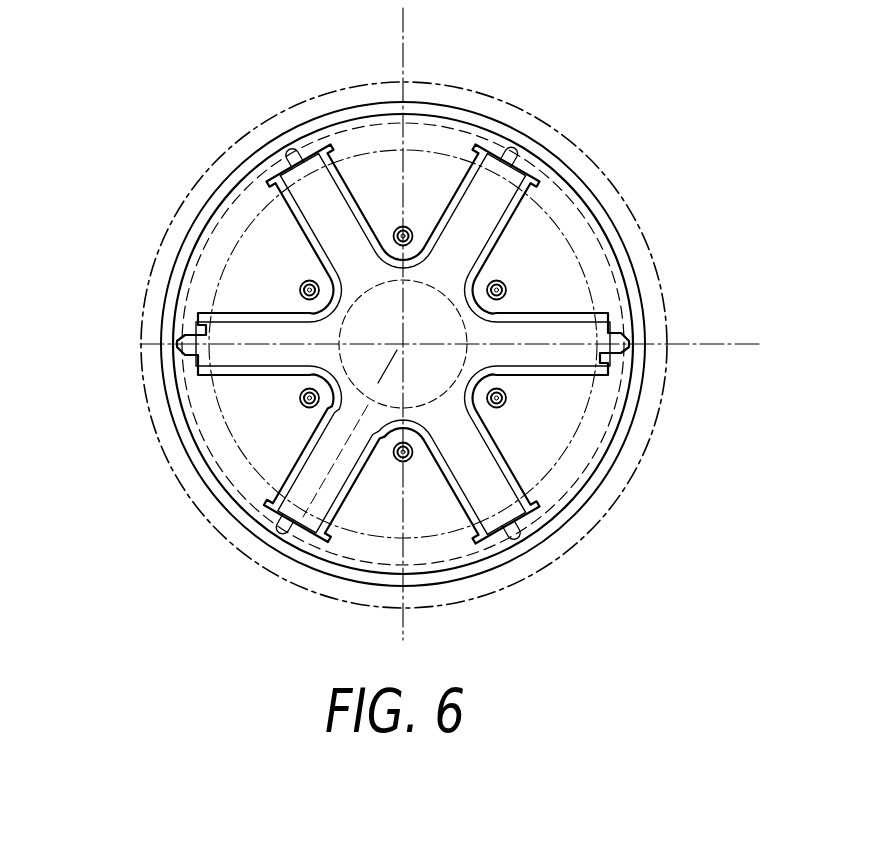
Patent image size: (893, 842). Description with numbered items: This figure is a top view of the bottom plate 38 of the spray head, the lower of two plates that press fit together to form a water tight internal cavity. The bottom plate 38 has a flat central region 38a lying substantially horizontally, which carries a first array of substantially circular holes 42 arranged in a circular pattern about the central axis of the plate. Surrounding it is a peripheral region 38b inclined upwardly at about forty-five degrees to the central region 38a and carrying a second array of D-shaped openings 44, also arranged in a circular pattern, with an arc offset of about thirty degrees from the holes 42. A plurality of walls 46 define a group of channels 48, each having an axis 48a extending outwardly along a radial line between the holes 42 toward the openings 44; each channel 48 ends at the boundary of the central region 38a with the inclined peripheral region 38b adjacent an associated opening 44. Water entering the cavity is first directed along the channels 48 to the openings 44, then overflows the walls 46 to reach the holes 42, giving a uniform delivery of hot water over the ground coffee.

The bottom plate 38 is at (607, 173).
The flat central region 38a is at (482, 344).
The peripheral region 38b is at (596, 452).
The circular holes 42 is at (525, 344).
The D-shaped openings 44 is at (290, 526).
The walls 46 is at (289, 225).
The channels 48 is at (322, 443).
The axis 48a is at (323, 478).